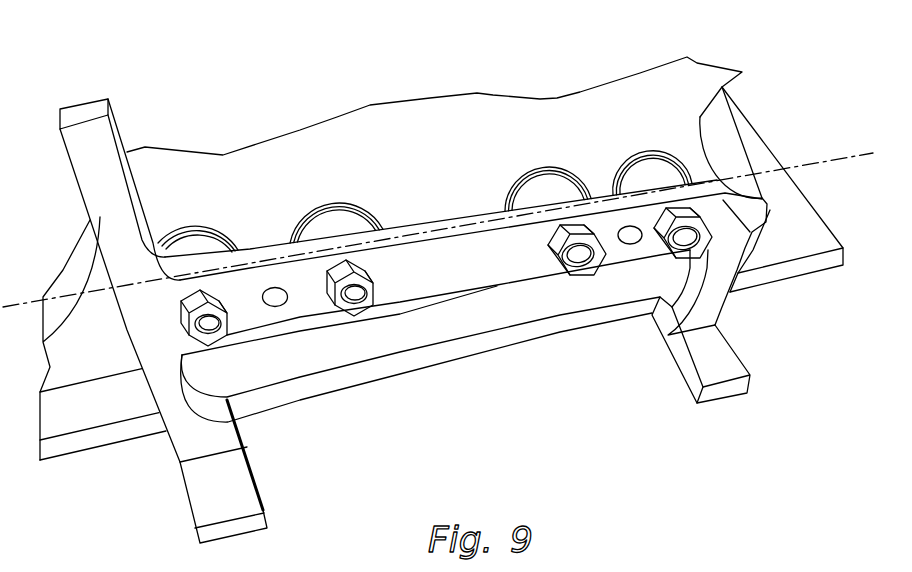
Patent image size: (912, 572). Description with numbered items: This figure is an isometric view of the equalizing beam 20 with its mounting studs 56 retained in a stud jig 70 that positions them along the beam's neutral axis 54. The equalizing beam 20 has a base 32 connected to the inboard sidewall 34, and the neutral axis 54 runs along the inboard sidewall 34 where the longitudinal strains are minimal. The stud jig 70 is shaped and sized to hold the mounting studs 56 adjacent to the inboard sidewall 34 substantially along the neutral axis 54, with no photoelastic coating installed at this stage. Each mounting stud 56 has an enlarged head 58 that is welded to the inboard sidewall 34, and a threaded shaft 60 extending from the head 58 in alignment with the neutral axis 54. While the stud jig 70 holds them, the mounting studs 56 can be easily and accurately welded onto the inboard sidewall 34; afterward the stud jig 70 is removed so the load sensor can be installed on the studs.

The equalizing beam 20 is at (673, 113).
The base 32 is at (113, 413).
The inboard sidewall 34 is at (425, 182).
The neutral axis 54 is at (847, 160).
The mounting stud 56 is at (328, 230).
The enlarged head 58 is at (353, 223).
The threaded shaft 60 is at (578, 263).
The stud jig 70 is at (685, 380).